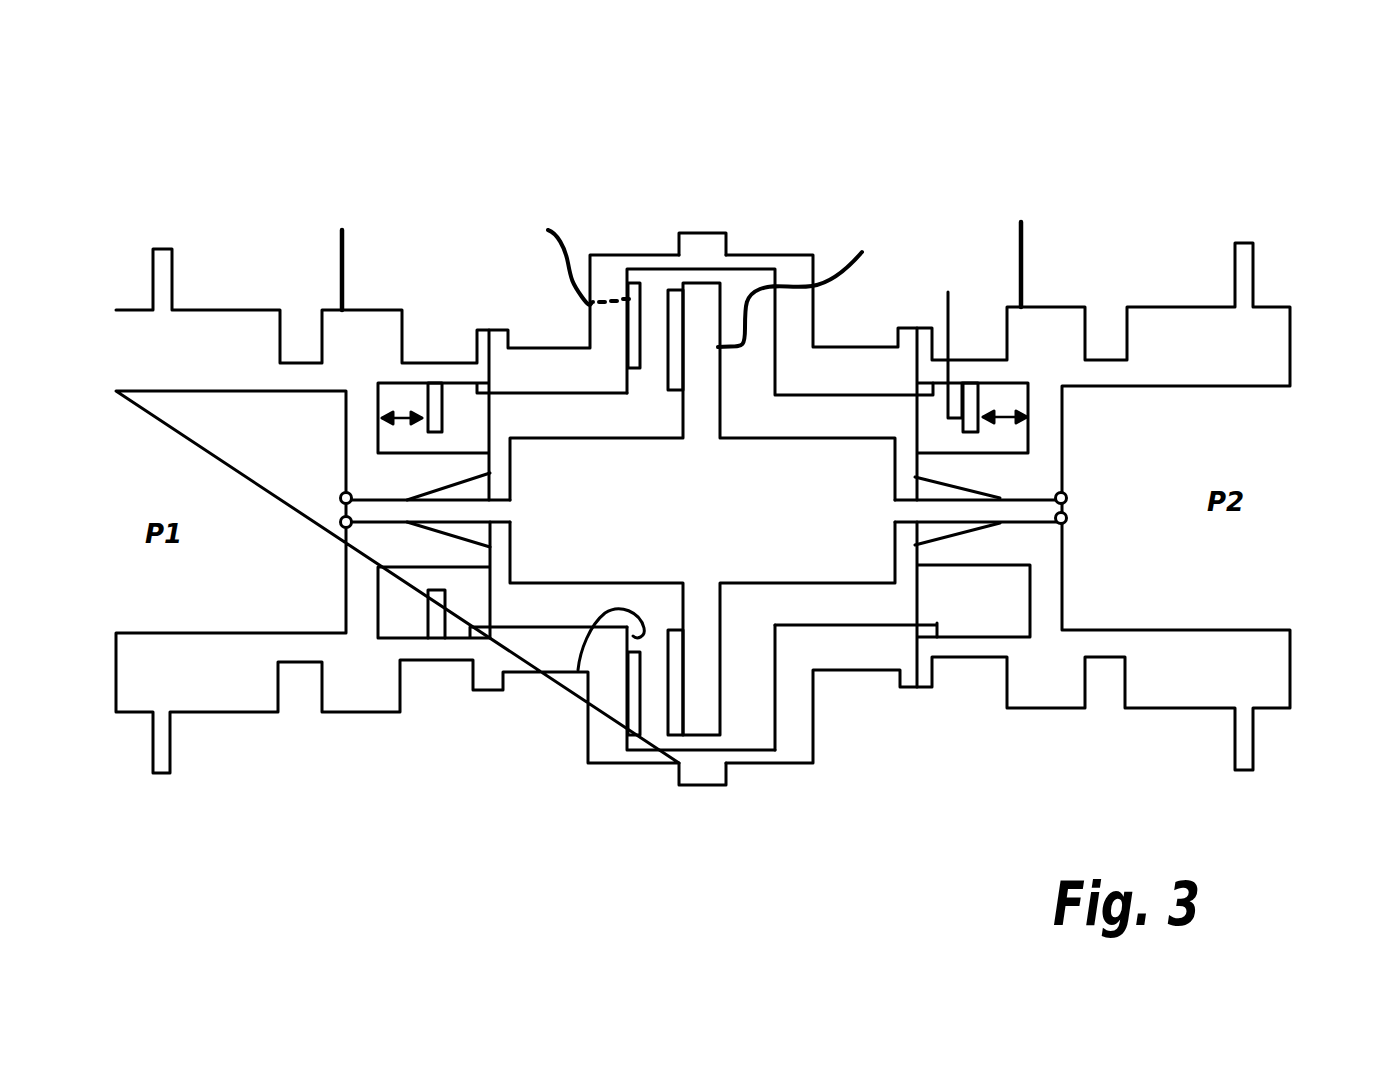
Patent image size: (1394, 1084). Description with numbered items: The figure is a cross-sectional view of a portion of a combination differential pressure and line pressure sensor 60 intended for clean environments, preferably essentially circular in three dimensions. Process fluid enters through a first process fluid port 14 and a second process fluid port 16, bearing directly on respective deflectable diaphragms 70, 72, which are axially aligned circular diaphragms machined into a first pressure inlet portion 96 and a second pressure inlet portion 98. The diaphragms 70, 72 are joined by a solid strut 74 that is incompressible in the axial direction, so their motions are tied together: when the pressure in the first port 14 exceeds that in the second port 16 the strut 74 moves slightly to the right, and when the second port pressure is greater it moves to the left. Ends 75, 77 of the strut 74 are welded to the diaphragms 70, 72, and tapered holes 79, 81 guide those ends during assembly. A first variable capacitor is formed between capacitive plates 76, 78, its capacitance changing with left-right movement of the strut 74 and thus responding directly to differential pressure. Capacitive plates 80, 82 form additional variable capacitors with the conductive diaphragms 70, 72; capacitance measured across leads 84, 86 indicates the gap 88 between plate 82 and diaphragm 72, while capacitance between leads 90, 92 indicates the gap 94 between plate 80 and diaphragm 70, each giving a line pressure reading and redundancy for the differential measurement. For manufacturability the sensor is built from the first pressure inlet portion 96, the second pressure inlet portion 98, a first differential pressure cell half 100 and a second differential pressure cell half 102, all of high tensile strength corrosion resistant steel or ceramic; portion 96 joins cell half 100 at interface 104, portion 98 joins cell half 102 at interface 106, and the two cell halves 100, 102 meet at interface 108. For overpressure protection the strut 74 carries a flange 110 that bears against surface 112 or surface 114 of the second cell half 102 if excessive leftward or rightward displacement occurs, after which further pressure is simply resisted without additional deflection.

The pressure sensor 60 is at (1068, 183).
The first process fluid port 14 is at (200, 466).
The second process fluid port 16 is at (1250, 445).
The deflectable diaphragm 70 is at (346, 563).
The deflectable diaphragm 72 is at (1062, 595).
The strut 74 is at (702, 509).
The end of strut 75 is at (340, 510).
The end of strut 77 is at (1063, 517).
The capacitive plate 76 is at (640, 270).
The capacitive plate 78 is at (678, 290).
The tapered hole 79 is at (470, 497).
The tapered hole 81 is at (905, 488).
The capacitive plate 80 is at (427, 402).
The gap 88 is at (975, 400).
The capacitive plate 82 is at (1003, 400).
The lead 84 is at (946, 293).
The lead 86 is at (1020, 233).
The lead 90 is at (342, 252).
The lead 92 is at (452, 403).
The gap 94 is at (393, 427).
The first pressure inlet portion 96 is at (363, 714).
The second pressure inlet portion 98 is at (1132, 710).
The first differential pressure cell half 100 is at (587, 722).
The second differential pressure cell half 102 is at (820, 714).
The interface 104 is at (478, 690).
The interface 106 is at (917, 690).
The interface 108 is at (703, 233).
The flange 110 is at (722, 683).
The surface 112 is at (578, 670).
The surface 114 is at (775, 650).